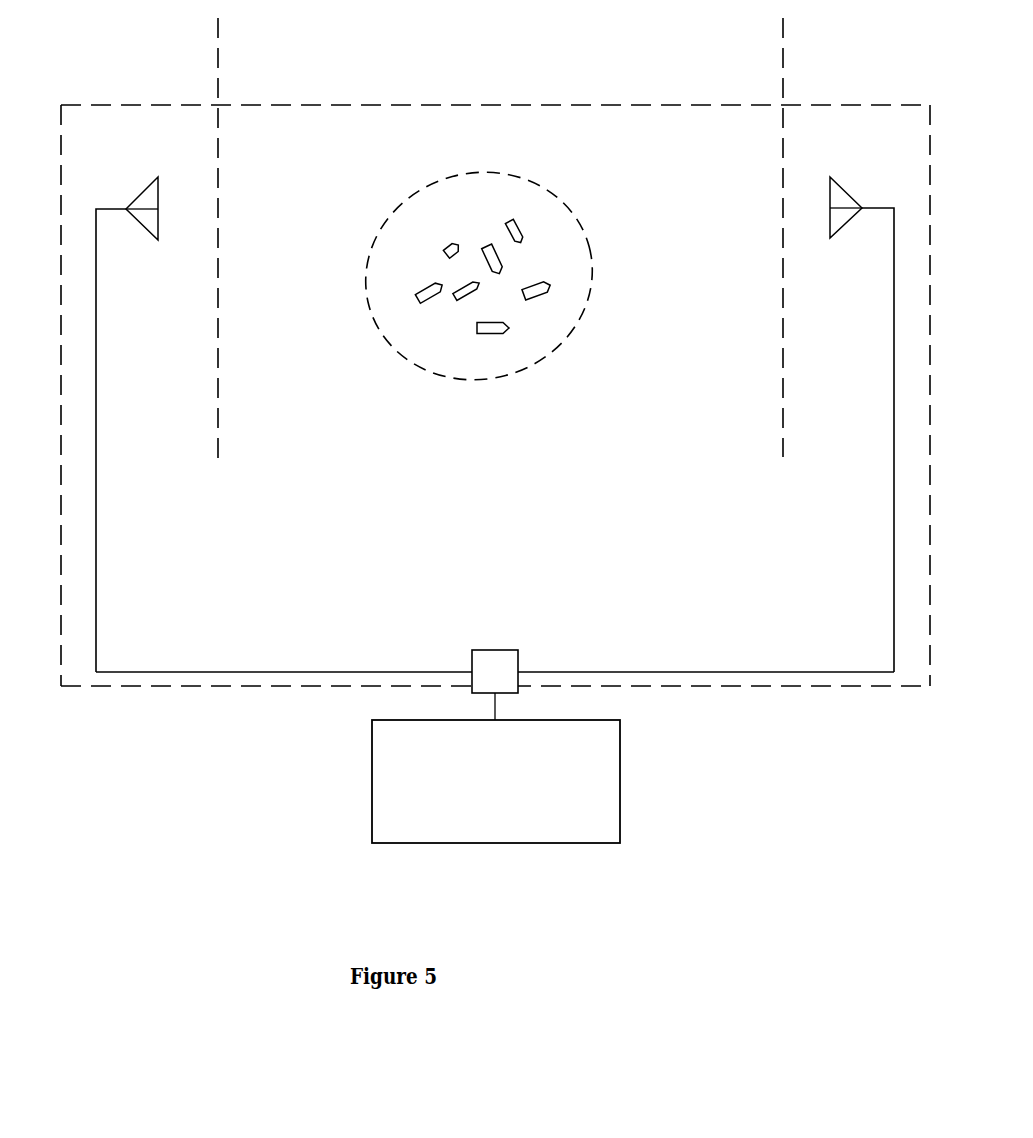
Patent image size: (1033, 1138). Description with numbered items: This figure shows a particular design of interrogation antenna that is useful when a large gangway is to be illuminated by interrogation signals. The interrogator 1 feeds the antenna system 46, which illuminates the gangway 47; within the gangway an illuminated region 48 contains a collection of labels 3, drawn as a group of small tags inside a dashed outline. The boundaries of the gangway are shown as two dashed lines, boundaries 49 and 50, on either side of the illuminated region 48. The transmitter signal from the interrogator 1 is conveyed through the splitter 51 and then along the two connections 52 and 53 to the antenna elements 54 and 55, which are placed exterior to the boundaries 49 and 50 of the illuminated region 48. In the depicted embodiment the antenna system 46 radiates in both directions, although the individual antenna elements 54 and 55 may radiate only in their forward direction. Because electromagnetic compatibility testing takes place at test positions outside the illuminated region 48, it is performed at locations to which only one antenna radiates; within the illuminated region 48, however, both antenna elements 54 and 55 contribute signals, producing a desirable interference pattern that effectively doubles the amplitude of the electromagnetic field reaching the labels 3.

The interrogator 1 is at (372, 773).
The labels 3 is at (580, 212).
The antenna system 46 is at (148, 690).
The gangway 47 is at (480, 105).
The illuminated region 48 is at (412, 363).
The boundary 49 is at (220, 388).
The boundary 50 is at (780, 392).
The splitter 51 is at (492, 662).
The connection 52 is at (96, 470).
The connection 53 is at (894, 508).
The antenna element 54 is at (152, 181).
The antenna element 55 is at (838, 182).